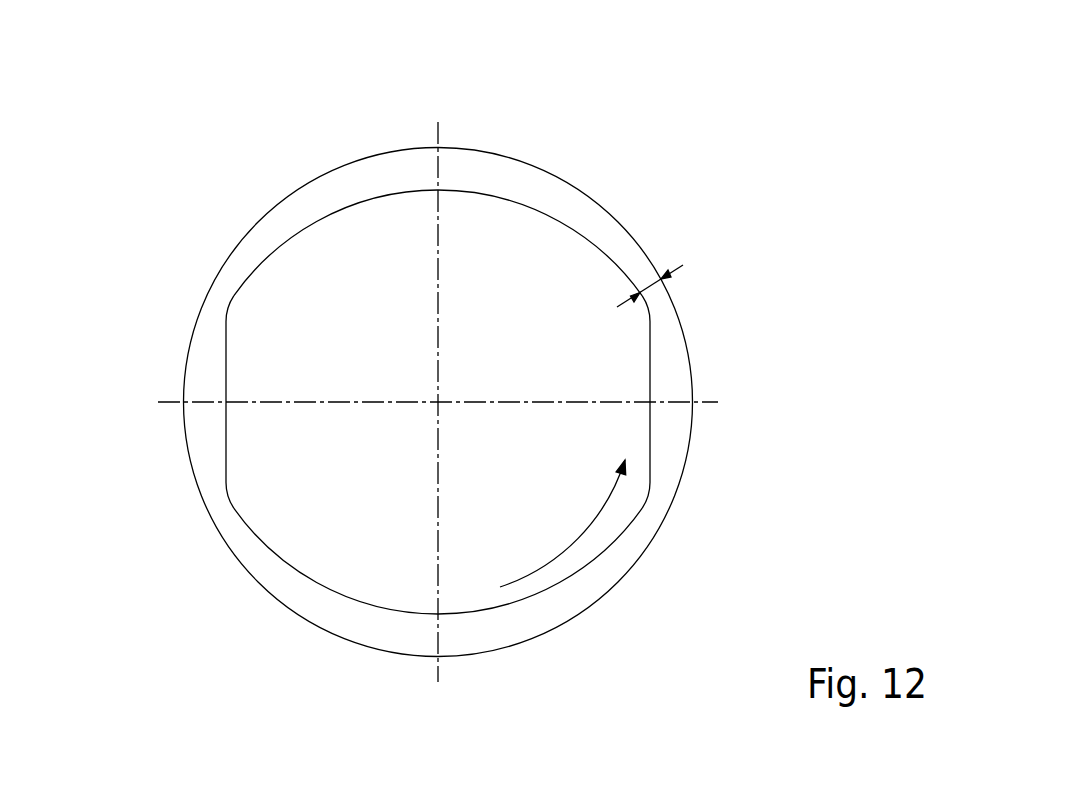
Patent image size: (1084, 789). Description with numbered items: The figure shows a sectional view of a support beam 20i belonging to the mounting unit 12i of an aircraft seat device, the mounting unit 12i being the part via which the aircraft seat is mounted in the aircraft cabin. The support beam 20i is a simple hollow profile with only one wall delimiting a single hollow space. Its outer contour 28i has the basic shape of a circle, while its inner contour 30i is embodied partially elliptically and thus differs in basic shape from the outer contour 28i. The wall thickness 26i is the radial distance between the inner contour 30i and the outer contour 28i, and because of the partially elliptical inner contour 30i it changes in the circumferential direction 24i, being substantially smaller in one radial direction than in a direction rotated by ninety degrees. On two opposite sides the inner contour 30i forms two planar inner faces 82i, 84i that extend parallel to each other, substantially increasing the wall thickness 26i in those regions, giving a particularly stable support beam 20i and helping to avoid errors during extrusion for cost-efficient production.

The mounting unit 12i is at (326, 124).
The support beam 20i is at (577, 213).
The circumferential direction 24i is at (590, 528).
The wall thickness 26i is at (650, 275).
The outer contour 28i is at (700, 422).
The inner contour 30i is at (337, 591).
The planar inner face 82i is at (226, 356).
The planar inner face 84i is at (652, 353).